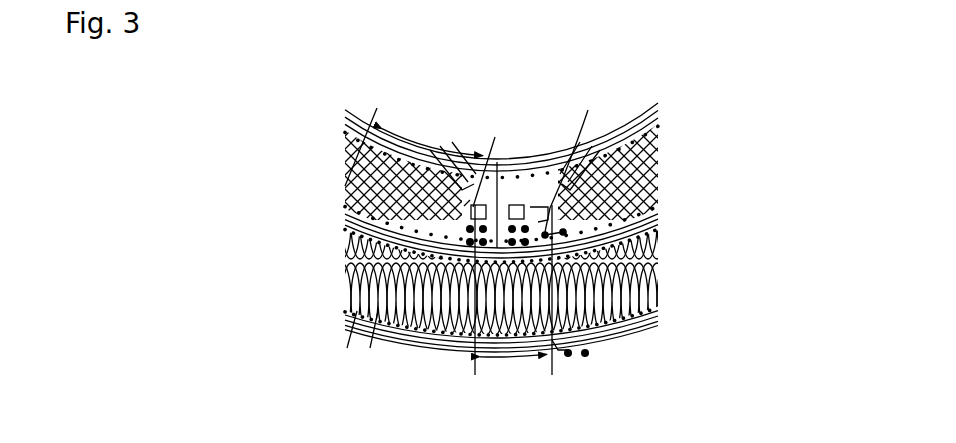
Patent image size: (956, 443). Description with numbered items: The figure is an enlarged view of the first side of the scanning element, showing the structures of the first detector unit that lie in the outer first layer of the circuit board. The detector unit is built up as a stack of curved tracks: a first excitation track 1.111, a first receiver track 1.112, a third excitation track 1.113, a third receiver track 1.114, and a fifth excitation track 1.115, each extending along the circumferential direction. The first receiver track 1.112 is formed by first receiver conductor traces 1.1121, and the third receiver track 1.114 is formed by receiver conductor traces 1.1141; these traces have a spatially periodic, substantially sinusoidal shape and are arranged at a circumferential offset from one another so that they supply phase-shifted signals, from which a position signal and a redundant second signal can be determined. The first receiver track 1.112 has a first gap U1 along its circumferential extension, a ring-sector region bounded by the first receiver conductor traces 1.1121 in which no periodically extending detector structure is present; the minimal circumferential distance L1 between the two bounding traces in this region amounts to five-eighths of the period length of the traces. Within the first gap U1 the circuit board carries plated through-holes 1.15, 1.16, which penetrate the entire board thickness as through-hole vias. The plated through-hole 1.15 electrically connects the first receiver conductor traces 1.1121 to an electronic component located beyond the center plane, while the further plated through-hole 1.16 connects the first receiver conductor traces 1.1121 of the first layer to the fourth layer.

The first excitation track 1.111 is at (343, 114).
The first receiver track 1.112 is at (343, 166).
The first receiver conductor traces 1.1121 is at (684, 153).
The third excitation track 1.113 is at (343, 215).
The third receiver track 1.114 is at (507, 281).
The receiver conductor traces 1.1141 is at (658, 234).
The fifth excitation track 1.115 is at (343, 316).
The plated through-hole 1.15 is at (531, 207).
The plated through-hole 1.16 is at (537, 213).
The minimal distance L1 is at (513, 377).
The first gap U1 is at (509, 413).